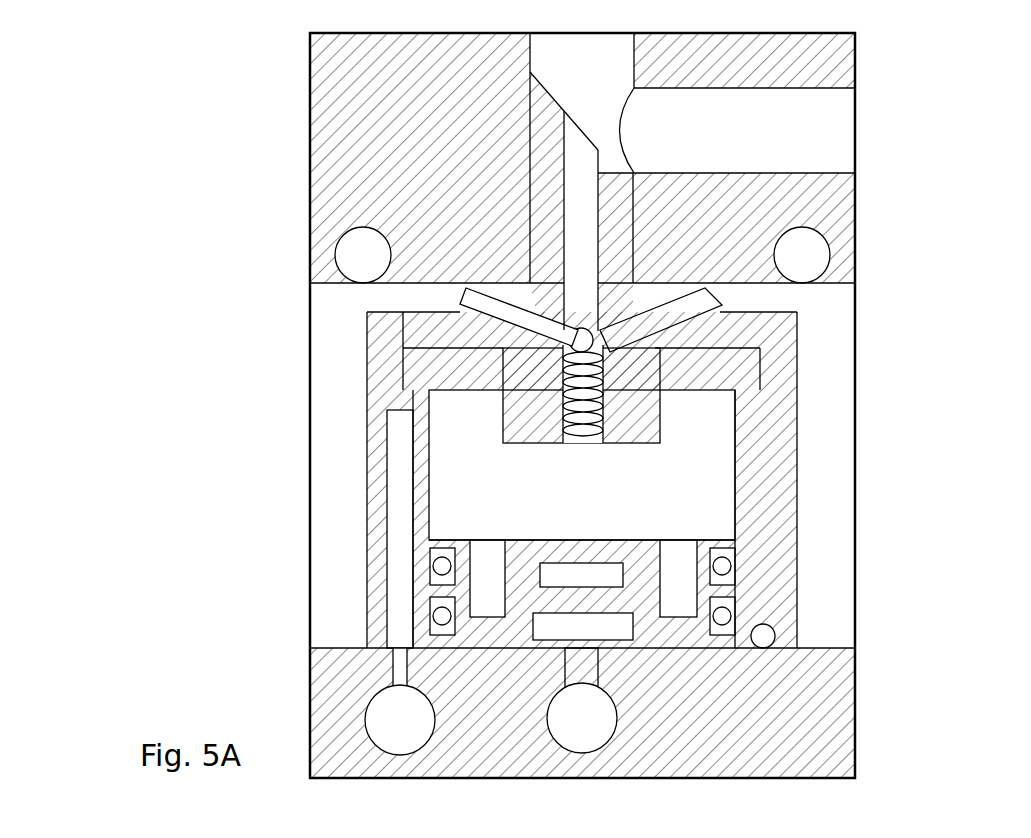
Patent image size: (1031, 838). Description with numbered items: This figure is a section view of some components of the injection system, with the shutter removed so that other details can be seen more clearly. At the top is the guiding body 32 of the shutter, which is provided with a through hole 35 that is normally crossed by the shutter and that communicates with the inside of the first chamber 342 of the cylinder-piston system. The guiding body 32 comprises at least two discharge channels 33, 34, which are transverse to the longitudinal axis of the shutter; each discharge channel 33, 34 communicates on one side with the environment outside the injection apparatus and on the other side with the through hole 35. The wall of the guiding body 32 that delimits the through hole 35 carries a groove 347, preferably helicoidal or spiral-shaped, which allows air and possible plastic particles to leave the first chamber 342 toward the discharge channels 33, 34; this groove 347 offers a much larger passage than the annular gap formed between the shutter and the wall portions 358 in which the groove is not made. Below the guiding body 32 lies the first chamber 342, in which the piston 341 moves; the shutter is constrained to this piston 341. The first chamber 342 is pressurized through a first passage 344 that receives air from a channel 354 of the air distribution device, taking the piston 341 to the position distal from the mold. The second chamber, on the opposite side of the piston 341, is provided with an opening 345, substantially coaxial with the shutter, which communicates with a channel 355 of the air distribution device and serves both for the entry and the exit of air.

The guiding body 32 is at (545, 172).
The through hole 35 is at (582, 230).
The discharge channel 33 is at (487, 313).
The discharge channel 34 is at (680, 313).
The groove 347 is at (563, 415).
The wall portions 358 is at (600, 380).
The first chamber 342 is at (470, 485).
The piston 341 is at (475, 632).
The first passage 344 is at (407, 648).
The opening 345 is at (590, 645).
The channel 354 is at (403, 740).
The channel 355 is at (578, 720).